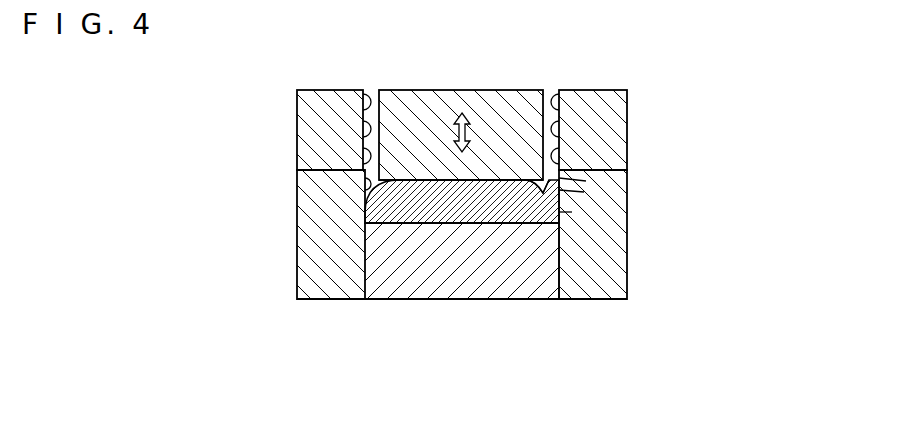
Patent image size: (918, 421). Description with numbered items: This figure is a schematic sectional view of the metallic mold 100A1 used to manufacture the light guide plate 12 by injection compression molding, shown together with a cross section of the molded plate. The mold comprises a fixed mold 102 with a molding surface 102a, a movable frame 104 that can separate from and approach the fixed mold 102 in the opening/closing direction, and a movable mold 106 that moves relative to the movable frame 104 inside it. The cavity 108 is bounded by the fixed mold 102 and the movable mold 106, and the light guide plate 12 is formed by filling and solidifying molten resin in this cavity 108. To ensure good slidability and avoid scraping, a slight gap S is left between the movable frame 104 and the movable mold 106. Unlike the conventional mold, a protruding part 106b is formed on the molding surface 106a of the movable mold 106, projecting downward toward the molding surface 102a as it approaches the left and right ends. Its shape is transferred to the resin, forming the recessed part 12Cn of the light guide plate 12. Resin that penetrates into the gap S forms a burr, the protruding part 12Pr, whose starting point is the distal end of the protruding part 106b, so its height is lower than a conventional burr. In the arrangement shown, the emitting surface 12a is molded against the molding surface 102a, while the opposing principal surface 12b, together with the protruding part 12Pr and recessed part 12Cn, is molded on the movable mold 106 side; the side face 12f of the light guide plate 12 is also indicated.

The metallic mold 100A1 is at (702, 77).
The fixed mold 102 is at (548, 300).
The molding surface 102a is at (627, 284).
The movable frame 104 is at (627, 131).
The movable mold 106 is at (436, 90).
The molding surface 106a is at (410, 180).
The protruding part 106b is at (376, 198).
The cavity 108 is at (431, 198).
The light guide plate 12 is at (473, 224).
The emitting surface 12a is at (492, 180).
The principal surface 12b is at (523, 224).
The recessed part 12Cn is at (546, 190).
The protruding part 12Pr is at (560, 183).
The side face of sintered body 12f is at (562, 212).
The gap S is at (373, 90).